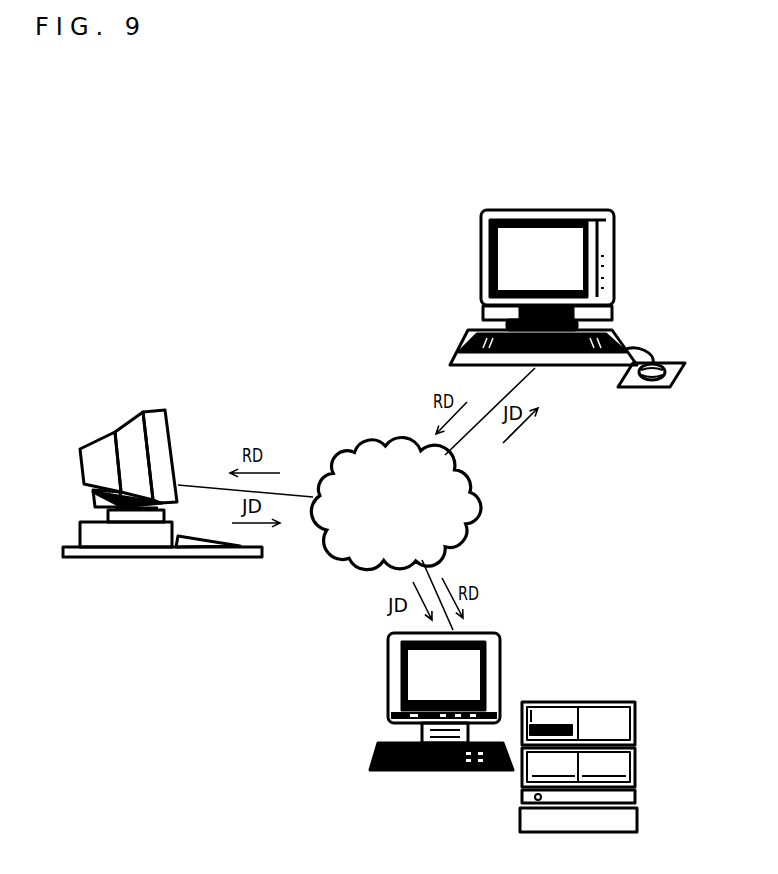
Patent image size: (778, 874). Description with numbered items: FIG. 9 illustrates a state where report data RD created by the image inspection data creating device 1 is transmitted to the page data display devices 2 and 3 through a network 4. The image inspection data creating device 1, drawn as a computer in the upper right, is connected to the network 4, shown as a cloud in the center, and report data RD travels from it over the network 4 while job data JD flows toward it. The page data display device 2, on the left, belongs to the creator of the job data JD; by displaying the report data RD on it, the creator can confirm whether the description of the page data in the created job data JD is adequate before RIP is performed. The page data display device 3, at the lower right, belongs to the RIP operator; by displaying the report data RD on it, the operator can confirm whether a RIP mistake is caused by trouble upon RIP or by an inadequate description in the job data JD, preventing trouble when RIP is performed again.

The image inspection data creating device 1 is at (568, 208).
The page data display device 2 is at (165, 430).
The page data display device 3 is at (495, 678).
The network 4 is at (480, 527).